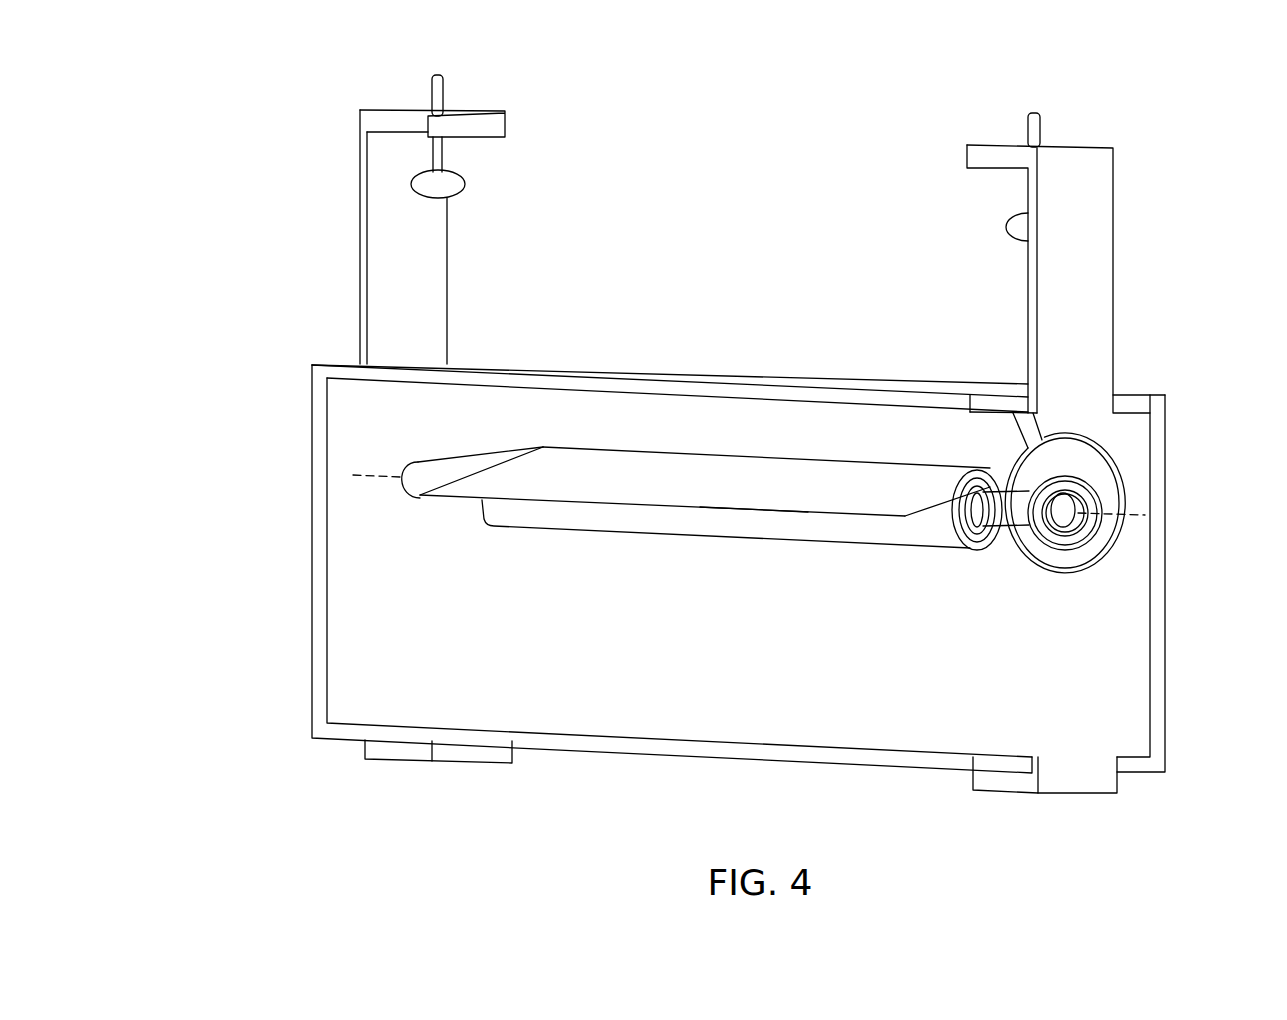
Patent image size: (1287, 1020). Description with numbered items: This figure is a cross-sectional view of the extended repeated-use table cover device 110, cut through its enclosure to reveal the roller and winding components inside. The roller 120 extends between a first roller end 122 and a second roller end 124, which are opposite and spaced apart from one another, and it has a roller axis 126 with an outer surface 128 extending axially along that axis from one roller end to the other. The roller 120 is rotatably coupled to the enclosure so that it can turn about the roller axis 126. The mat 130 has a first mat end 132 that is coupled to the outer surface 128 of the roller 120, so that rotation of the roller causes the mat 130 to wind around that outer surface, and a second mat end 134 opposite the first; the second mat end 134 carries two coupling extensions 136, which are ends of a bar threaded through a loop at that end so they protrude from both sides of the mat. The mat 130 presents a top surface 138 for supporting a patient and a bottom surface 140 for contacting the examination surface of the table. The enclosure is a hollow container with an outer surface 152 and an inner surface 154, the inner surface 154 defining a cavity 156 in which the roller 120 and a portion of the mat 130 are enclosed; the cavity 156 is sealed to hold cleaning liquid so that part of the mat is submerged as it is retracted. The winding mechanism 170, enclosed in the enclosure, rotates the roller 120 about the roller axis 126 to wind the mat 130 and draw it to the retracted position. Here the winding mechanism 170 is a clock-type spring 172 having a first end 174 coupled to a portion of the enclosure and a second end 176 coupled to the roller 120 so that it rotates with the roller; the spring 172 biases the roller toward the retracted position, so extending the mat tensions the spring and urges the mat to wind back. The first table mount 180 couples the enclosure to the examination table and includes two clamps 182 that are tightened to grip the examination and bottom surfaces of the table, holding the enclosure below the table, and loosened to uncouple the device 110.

The extended repeated-use table cover device 110 is at (786, 91).
The roller 120 is at (420, 458).
The first roller end 122 is at (1068, 510).
The second roller end 124 is at (407, 493).
The roller axis 126 is at (353, 476).
The outer surface 128 is at (386, 479).
The mat 130 is at (538, 470).
The first mat end 132 is at (995, 490).
The second mat end 134 is at (603, 505).
The coupling extensions 136 is at (420, 500).
The top surface 138 is at (794, 483).
The bottom surface 140 is at (808, 518).
The outer surface 152 is at (706, 378).
The inner surface 154 is at (1130, 668).
The cavity 156 is at (1100, 608).
The winding mechanism 170 is at (1085, 436).
The clock-type spring 172 is at (1078, 497).
The first end 174 is at (1021, 445).
The second end 176 is at (1072, 505).
The first table mount 180 is at (358, 190).
The clamps 182 is at (468, 175).